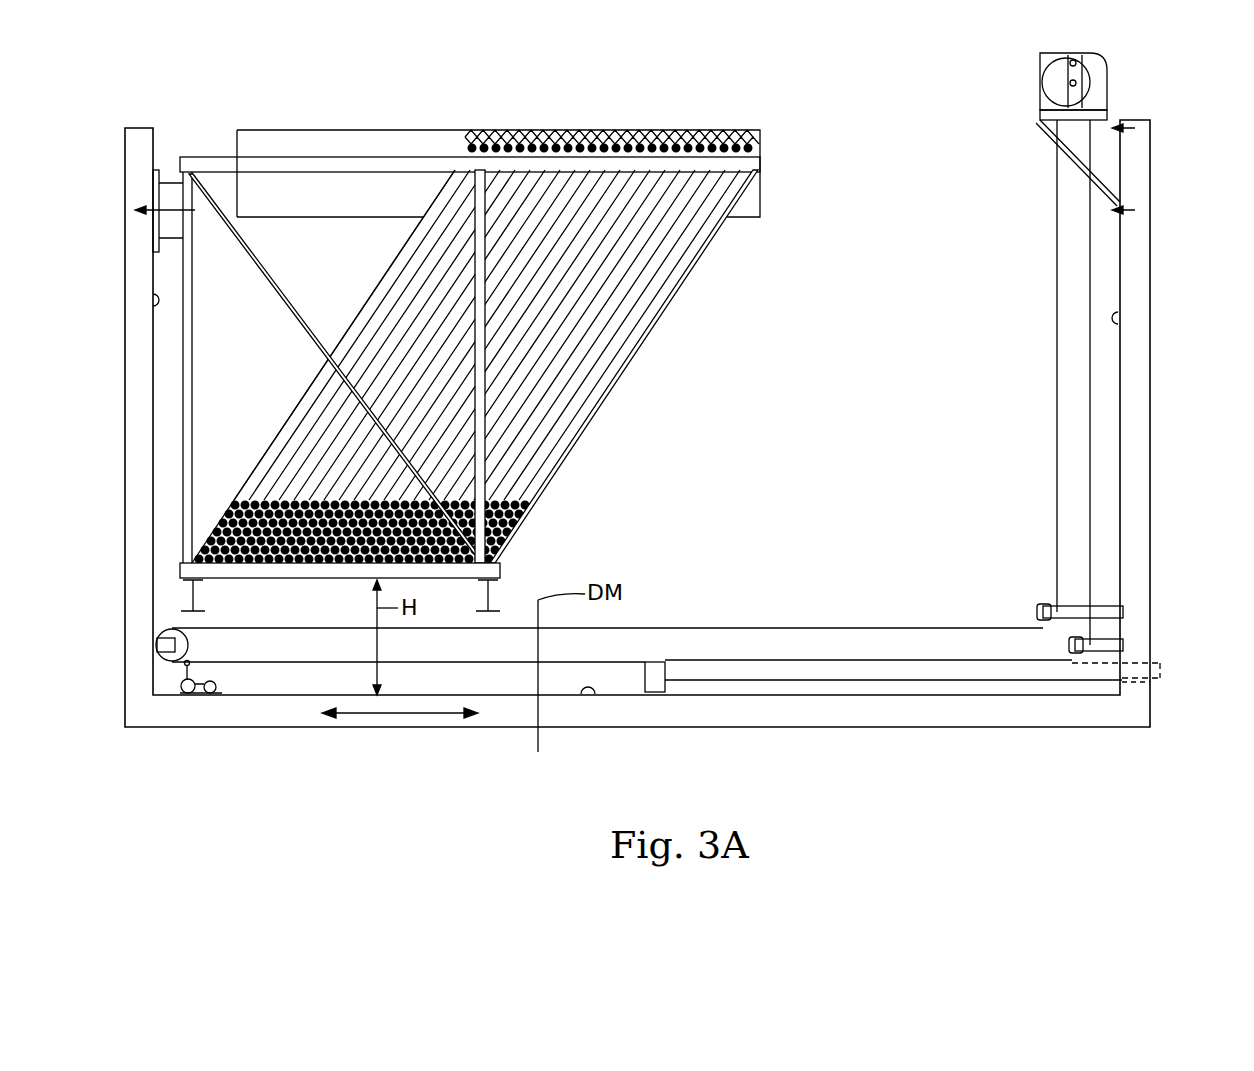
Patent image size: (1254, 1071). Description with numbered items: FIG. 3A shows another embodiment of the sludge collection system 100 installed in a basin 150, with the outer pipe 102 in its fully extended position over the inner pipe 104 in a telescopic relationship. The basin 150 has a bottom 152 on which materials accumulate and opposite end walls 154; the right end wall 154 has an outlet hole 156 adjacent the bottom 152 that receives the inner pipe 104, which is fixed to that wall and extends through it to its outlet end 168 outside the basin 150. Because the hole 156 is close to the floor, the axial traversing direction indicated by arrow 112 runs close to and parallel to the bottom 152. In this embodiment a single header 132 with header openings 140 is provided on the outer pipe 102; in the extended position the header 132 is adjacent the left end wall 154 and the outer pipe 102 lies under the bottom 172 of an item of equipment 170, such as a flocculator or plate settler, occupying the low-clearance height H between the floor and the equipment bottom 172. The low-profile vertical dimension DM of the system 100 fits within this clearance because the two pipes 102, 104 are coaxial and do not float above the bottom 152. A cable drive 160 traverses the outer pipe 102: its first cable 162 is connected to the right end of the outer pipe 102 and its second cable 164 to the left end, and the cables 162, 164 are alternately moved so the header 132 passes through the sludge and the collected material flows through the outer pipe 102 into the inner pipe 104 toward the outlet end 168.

The system 100 is at (896, 108).
The outer pipe 102 is at (608, 665).
The inner pipe 104 is at (848, 672).
The arrow 112 is at (410, 716).
The header 132 is at (163, 700).
The header openings 140 is at (222, 690).
The basin 150 is at (155, 130).
The bottom 152 is at (590, 696).
The end walls 154 is at (150, 300).
The outlet hole 156 is at (1140, 682).
The cable drive 160 is at (1110, 72).
The first cable 162 is at (968, 657).
The second cable 164 is at (345, 628).
The outlet end 168 is at (1162, 672).
The equipment 170 is at (537, 185).
The bottom 172 is at (500, 572).